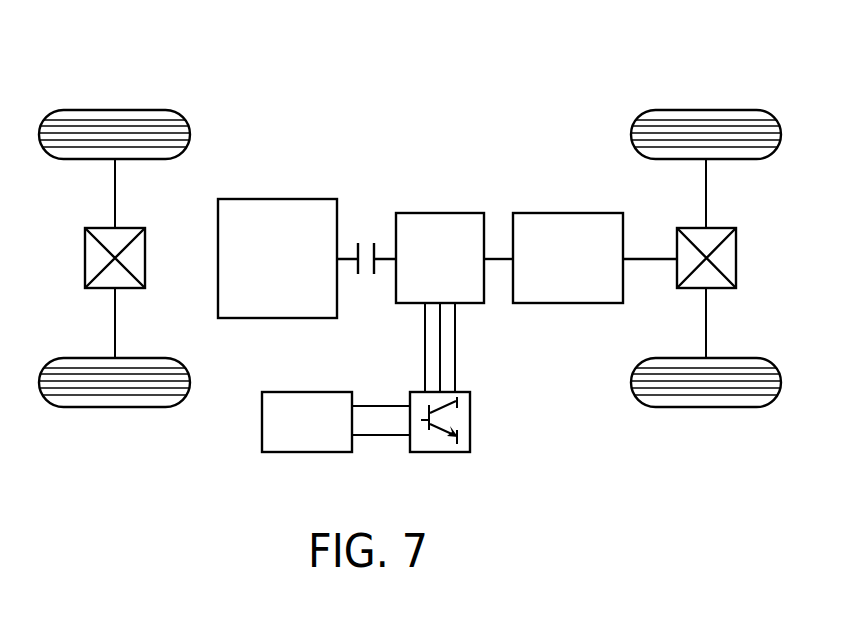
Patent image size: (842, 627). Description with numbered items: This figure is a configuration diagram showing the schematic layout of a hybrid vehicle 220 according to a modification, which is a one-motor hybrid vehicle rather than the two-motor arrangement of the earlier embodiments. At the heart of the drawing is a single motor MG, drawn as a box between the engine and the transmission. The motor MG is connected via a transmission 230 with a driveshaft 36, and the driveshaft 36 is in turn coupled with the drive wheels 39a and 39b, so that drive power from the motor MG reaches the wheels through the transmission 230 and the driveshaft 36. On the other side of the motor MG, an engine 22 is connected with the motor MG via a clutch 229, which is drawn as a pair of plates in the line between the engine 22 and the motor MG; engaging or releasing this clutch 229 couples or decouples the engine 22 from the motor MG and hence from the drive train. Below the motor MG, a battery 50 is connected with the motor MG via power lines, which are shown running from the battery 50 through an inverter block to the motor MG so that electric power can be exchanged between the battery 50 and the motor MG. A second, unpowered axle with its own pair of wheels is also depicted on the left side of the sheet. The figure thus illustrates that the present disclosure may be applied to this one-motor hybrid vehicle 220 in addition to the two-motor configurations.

The hybrid vehicle 220 is at (507, 96).
The engine 22 is at (278, 197).
The clutch 229 is at (367, 244).
The motor MG is at (440, 212).
The transmission 230 is at (558, 212).
The driveshaft 36 is at (651, 254).
The drive wheel 39a is at (706, 109).
The drive wheel 39b is at (706, 408).
The battery 50 is at (307, 390).